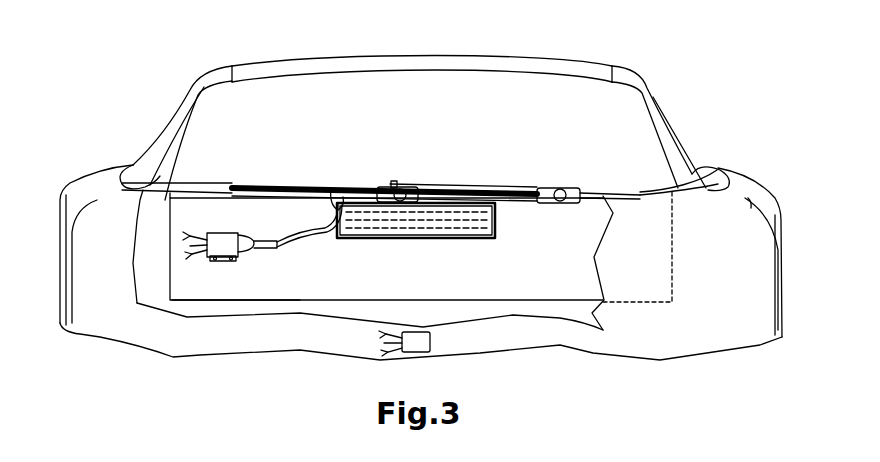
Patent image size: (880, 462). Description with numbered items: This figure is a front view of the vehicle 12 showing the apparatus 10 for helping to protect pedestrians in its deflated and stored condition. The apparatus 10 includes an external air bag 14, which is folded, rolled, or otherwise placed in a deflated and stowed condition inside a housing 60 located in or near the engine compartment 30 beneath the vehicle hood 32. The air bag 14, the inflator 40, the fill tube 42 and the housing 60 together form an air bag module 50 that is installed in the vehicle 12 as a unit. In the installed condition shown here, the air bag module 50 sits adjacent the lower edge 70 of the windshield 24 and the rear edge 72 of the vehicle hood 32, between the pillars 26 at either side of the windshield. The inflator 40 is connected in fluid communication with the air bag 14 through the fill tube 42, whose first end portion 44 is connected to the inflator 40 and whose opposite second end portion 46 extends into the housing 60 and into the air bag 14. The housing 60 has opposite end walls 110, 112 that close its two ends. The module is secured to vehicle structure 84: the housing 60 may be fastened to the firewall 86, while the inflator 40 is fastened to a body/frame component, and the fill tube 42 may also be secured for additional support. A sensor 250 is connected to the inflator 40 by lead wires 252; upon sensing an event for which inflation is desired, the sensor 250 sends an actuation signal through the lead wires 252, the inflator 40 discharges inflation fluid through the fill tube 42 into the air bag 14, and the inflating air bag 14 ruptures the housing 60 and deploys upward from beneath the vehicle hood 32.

The apparatus 10 is at (436, 218).
The vehicle 12 is at (104, 150).
The air bag 14 is at (413, 224).
The windshield 24 is at (455, 115).
The pillars 26 is at (177, 128).
The engine compartment 30 is at (203, 287).
The vehicle hood 32 is at (618, 310).
The inflator 40 is at (224, 242).
The fill tube 42 is at (272, 250).
The first end portion 44 is at (257, 242).
The second end portion 46 is at (330, 232).
The air bag module 50 is at (346, 256).
The housing 60 is at (449, 247).
The lower edge 70 is at (627, 188).
The rear edge 72 is at (718, 188).
The vehicle structure 84 is at (478, 286).
The firewall 86 is at (242, 290).
The end wall 110 is at (330, 192).
The end wall 112 is at (495, 213).
The sensor 250 is at (418, 348).
The lead wires 252 is at (185, 240).